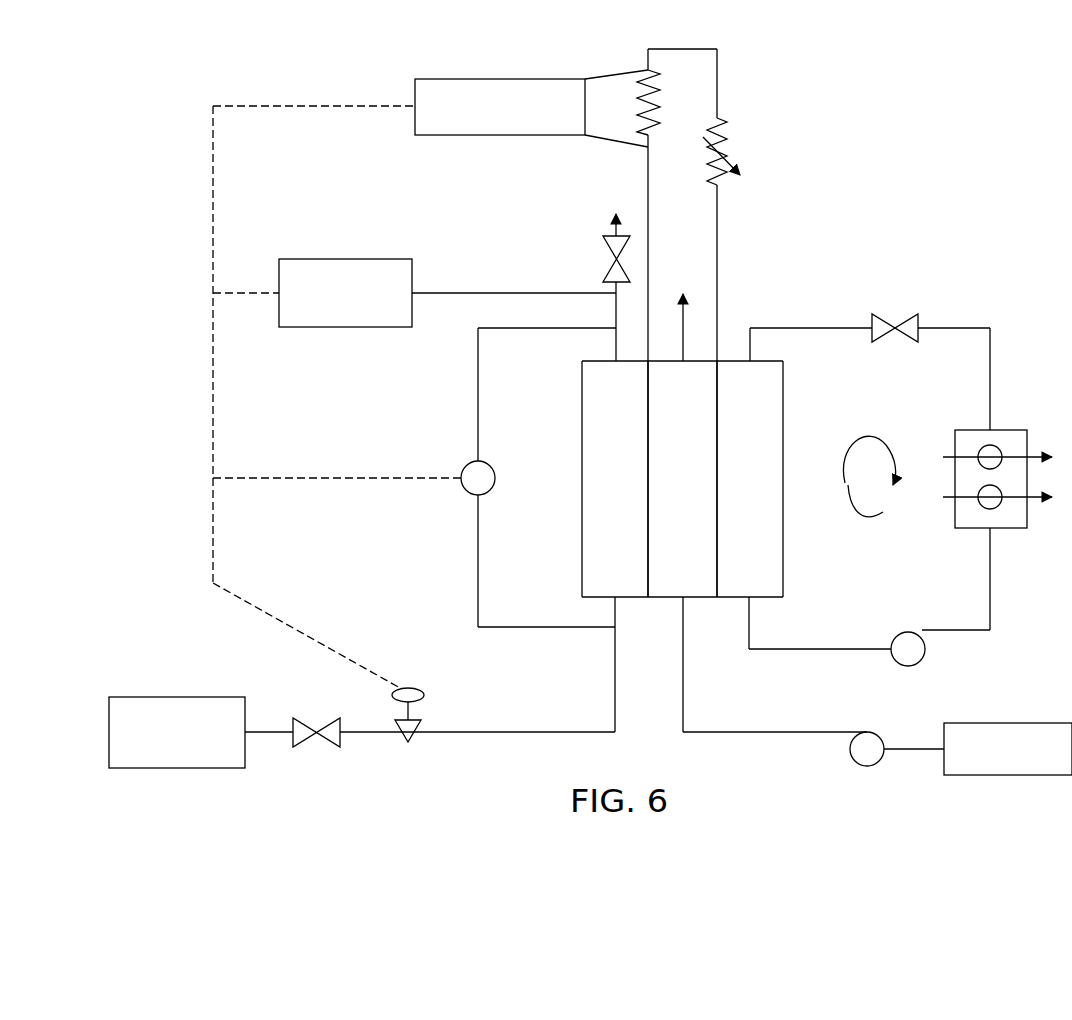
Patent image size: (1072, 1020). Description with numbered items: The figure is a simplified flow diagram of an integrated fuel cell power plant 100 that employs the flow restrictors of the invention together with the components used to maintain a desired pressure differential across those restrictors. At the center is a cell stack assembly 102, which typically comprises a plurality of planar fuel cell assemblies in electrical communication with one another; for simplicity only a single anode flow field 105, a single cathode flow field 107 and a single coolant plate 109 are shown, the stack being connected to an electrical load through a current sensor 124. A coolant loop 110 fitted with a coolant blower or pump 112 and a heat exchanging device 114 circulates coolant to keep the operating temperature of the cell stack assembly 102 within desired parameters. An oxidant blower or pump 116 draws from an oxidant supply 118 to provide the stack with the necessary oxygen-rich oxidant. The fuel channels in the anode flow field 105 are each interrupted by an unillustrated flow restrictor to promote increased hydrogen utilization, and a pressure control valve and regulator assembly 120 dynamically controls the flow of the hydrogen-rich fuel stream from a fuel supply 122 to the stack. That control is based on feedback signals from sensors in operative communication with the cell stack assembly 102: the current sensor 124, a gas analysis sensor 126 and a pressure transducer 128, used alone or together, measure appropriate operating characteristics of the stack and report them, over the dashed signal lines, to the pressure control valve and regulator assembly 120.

The integrated fuel cell power plant 100 is at (586, 429).
The cell stack assembly 102 is at (740, 324).
The anode flow field 105 is at (608, 413).
The cathode flow field 107 is at (677, 470).
The coolant plate 109 is at (758, 423).
The coolant loop 110 is at (843, 481).
The coolant blower or pump 112 is at (897, 634).
The heat exchanging device 114 is at (977, 430).
The oxidant blower or pump 116 is at (850, 751).
The oxidant supply 118 is at (992, 723).
The pressure control valve and regulator assembly 120 is at (377, 753).
The fuel supply 122 is at (162, 697).
The current sensor 124 is at (478, 79).
The gas analysis sensor 126 is at (323, 259).
The pressure transducer 128 is at (464, 467).